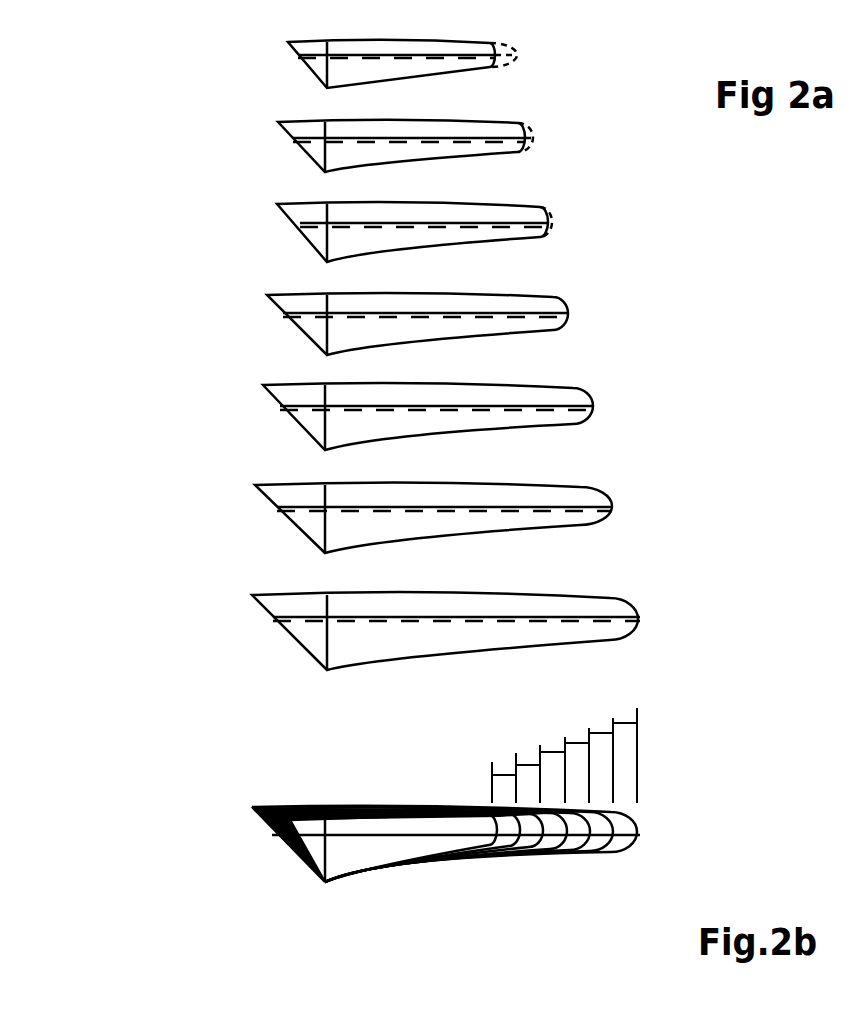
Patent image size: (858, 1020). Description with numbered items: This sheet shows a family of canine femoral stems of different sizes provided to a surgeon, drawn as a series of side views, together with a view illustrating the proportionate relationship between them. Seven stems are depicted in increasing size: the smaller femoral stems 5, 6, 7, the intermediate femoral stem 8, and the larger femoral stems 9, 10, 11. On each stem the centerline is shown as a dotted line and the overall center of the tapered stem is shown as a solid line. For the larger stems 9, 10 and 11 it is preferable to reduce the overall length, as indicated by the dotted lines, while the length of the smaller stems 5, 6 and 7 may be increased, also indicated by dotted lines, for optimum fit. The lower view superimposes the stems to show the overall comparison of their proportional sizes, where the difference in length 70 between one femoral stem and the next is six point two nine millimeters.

In FIG. 2a, the femoral stem 5 is at (277, 73).
In FIG. 2a, the femoral stem 6 is at (267, 158).
In FIG. 2a, the femoral stem 7 is at (267, 243).
In FIG. 2a, the femoral stem 8 is at (257, 340).
In FIG. 2a, the femoral stem 9 is at (245, 427).
In FIG. 2a, the femoral stem 10 is at (245, 533).
In FIG. 2a, the femoral stem 11 is at (245, 652).
In FIG. 2b, the difference in length 70 is at (613, 722).